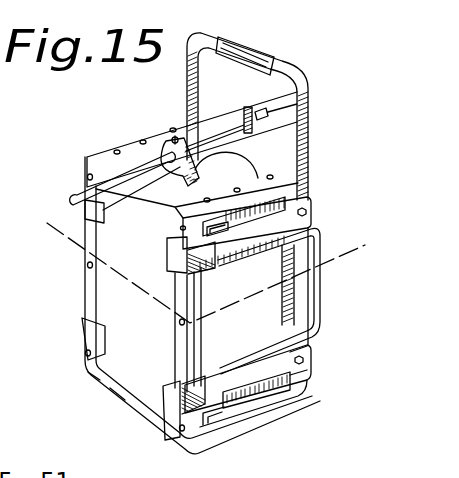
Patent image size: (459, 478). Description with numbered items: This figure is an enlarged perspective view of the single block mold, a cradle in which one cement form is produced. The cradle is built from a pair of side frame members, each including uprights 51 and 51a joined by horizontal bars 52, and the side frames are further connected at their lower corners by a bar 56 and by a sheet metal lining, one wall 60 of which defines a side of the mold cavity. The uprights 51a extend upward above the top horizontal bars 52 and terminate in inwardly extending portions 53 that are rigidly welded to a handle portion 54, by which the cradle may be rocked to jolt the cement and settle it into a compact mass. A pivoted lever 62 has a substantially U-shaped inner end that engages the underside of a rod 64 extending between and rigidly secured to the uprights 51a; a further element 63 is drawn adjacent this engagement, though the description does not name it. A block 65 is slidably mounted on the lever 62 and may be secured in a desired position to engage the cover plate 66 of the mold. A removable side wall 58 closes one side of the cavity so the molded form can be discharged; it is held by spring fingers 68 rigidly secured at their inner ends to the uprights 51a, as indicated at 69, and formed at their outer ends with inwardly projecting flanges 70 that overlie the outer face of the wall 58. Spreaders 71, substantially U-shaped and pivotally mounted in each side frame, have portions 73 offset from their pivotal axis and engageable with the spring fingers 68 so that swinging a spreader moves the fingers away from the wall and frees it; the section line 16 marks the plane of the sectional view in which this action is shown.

The section line 16- 16 is at (52, 246).
The upright 51 is at (90, 293).
The upright 51a is at (308, 197).
The horizontal bar 52 is at (289, 184).
The inwardly extending portion 53 is at (225, 43).
The handle portion 54 is at (263, 57).
The bar 56 is at (123, 394).
The removable side wall 58 is at (121, 367).
The wall of the sheet metal lining 60 is at (281, 320).
The pivoted lever 62 is at (141, 170).
The connecting rod 63 is at (257, 113).
The rod 64 is at (262, 121).
The block 65 is at (181, 175).
The cover plate 66 is at (151, 148).
The spring finger 68 is at (289, 372).
The securing point of spring finger 69 is at (306, 212).
The inwardly projecting flange 70 is at (100, 222).
The spreader 71 is at (323, 288).
The offset portion 73 is at (250, 268).